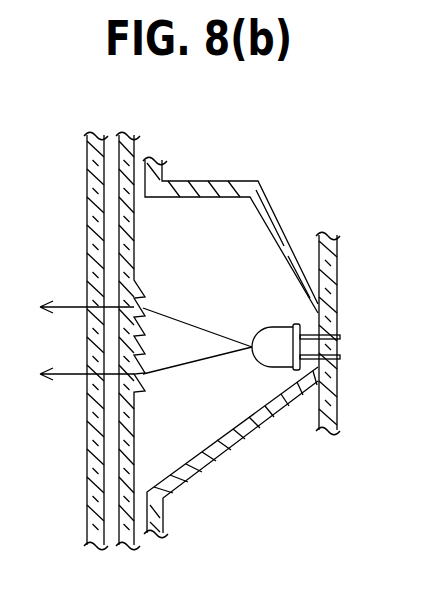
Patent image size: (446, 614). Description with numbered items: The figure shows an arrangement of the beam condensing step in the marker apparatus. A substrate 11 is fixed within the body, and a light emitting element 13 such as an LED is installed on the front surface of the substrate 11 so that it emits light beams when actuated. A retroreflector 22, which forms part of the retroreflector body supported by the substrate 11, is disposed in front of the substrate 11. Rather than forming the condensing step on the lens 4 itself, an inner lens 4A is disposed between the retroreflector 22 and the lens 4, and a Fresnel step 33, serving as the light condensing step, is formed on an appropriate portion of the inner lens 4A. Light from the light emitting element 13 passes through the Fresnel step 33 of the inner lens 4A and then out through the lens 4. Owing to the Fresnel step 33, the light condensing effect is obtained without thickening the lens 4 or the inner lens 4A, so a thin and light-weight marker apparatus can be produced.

The lens 4 is at (90, 203).
The inner lens 4A is at (133, 272).
The retroreflector 22 is at (240, 186).
The substrate 11 is at (325, 300).
The light emitting element 13 is at (272, 353).
The Fresnel step 33 is at (148, 328).